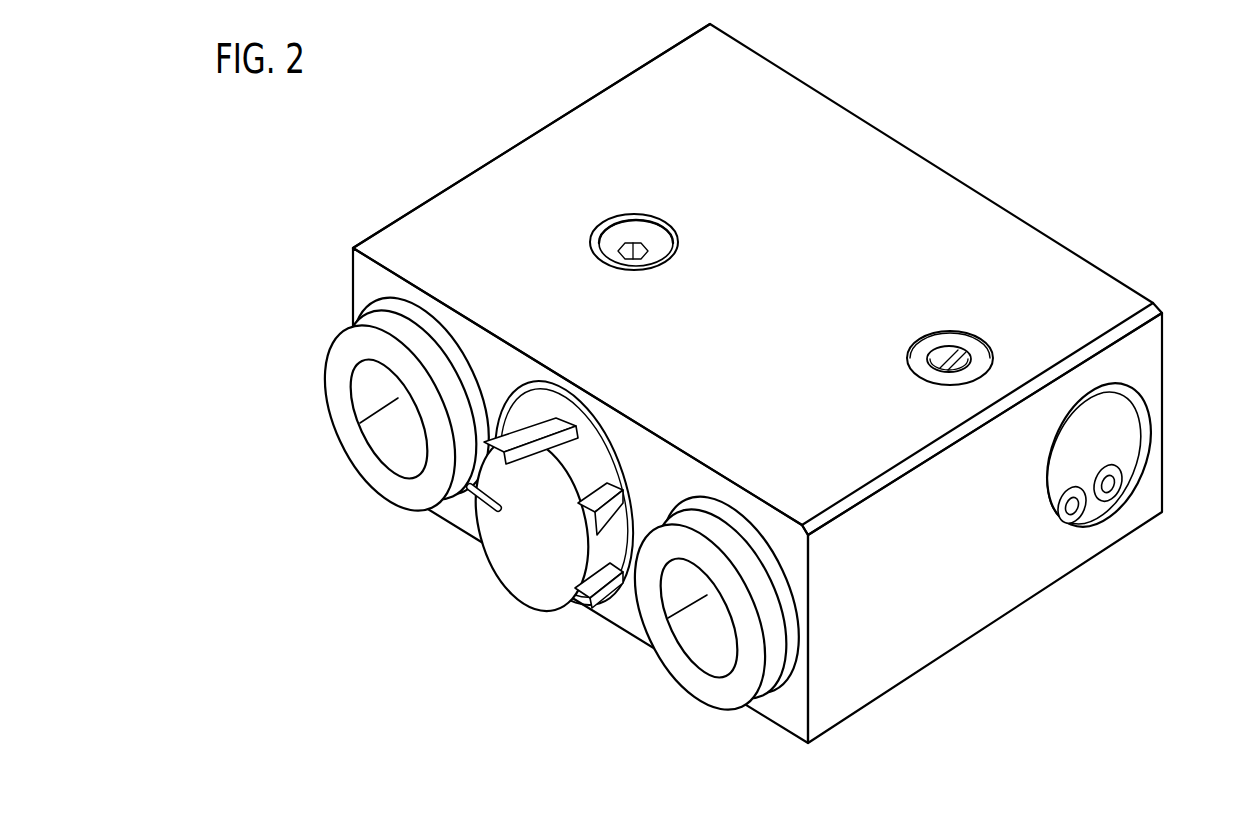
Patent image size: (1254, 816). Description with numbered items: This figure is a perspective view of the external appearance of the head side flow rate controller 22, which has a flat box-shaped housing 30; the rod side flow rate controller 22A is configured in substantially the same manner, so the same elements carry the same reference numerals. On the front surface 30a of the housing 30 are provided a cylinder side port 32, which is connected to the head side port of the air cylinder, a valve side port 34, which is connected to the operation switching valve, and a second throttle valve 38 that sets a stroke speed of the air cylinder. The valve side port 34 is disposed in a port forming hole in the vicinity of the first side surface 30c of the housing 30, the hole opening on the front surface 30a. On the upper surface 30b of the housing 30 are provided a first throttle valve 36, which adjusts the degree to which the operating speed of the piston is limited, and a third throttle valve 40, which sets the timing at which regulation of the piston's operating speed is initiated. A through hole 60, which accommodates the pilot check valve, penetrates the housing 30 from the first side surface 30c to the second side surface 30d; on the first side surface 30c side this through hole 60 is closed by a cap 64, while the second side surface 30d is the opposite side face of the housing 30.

The head side flow rate controller 22 is at (534, 104).
The rod side flow rate controller 22A is at (750, 388).
The housing 30 is at (903, 160).
The front surface 30a is at (363, 292).
The upper surface 30b is at (802, 100).
The first side surface 30c is at (995, 597).
The second side surface 30d is at (487, 163).
The cylinder side port 32 is at (383, 447).
The valve side port 34 is at (695, 643).
The first throttle valve 36 is at (642, 236).
The second throttle valve 38 is at (540, 568).
The third throttle valve 40 is at (922, 350).
The through hole 60 is at (1115, 497).
The cap 64 is at (1110, 427).